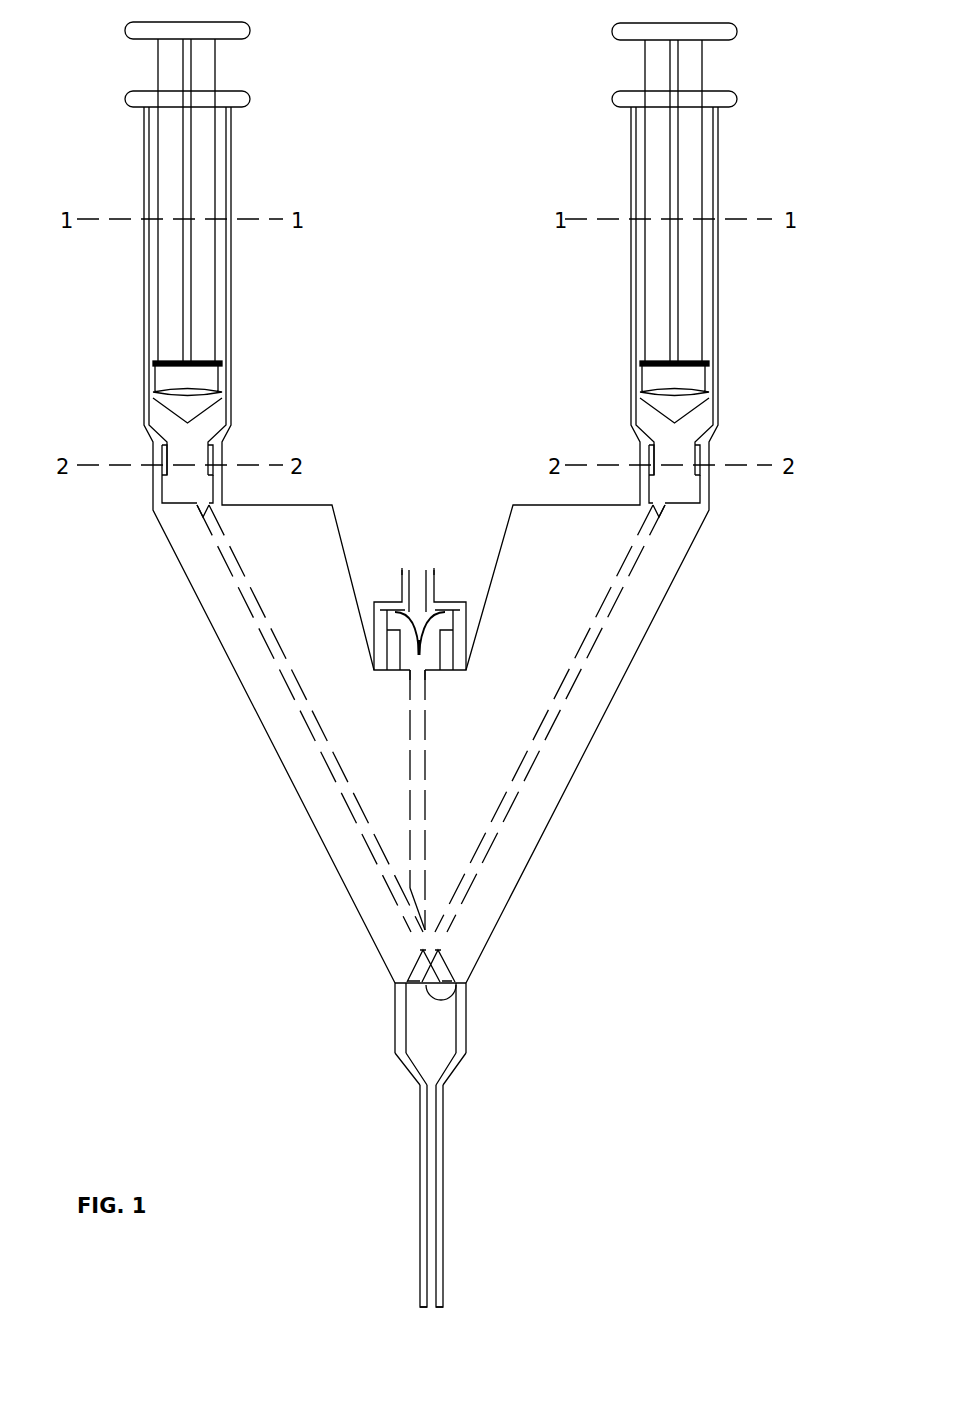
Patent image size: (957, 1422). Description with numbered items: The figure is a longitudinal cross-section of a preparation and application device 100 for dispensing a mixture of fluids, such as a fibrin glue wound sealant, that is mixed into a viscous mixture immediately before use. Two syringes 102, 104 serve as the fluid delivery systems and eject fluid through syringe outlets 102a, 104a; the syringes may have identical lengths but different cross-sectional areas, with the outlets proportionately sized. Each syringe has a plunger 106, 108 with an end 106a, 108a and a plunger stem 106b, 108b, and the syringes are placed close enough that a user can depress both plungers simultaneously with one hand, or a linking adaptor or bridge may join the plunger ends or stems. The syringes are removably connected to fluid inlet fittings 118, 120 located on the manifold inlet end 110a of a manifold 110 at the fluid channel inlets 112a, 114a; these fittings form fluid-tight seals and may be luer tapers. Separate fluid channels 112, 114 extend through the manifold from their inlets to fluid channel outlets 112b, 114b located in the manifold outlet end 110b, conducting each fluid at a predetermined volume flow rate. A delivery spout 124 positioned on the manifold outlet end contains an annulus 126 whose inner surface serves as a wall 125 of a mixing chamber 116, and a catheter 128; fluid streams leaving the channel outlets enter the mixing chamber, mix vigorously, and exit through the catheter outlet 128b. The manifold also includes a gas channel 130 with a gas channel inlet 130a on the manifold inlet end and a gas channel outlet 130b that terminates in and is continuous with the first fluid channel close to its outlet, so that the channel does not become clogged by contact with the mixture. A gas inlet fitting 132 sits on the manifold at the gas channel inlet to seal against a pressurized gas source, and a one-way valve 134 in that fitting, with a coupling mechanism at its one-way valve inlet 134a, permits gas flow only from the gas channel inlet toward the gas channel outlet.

The preparation and application device 100 is at (168, 652).
The syringe 102 is at (236, 270).
The syringe outlet 102a is at (190, 455).
The syringe 104 is at (726, 268).
The syringe outlet 104a is at (678, 455).
The plunger 106 is at (228, 62).
The plunger end 106a is at (128, 30).
The plunger stem 106b is at (158, 78).
The plunger 108 is at (716, 64).
The plunger end 108a is at (616, 32).
The plunger stem 108b is at (645, 80).
The manifold 110 is at (402, 416).
The manifold inlet end 110a is at (333, 500).
The manifold outlet end 110b is at (452, 997).
The fluid channel 112 is at (256, 582).
The fluid channel inlet 112a is at (192, 513).
The fluid channel outlet 112b is at (459, 976).
The fluid channel 114 is at (610, 578).
The fluid channel inlet 114a is at (670, 512).
The fluid channel outlet 114b is at (403, 977).
The mixing chamber 116 is at (450, 1035).
The fluid inlet fitting 118 is at (150, 488).
The fluid inlet fitting 120 is at (724, 486).
The delivery spout 124 is at (487, 1307).
The wall 125 is at (396, 1021).
The annulus 126 is at (398, 1050).
The catheter 128 is at (446, 1108).
The catheter outlet 128b is at (432, 1314).
The gas channel 130 is at (430, 735).
The gas channel inlet 130a is at (404, 686).
The gas channel outlet 130b is at (410, 908).
The gas inlet fitting 132 is at (372, 630).
The one-way valve 134 is at (428, 642).
The one-way valve inlet 134a is at (421, 562).